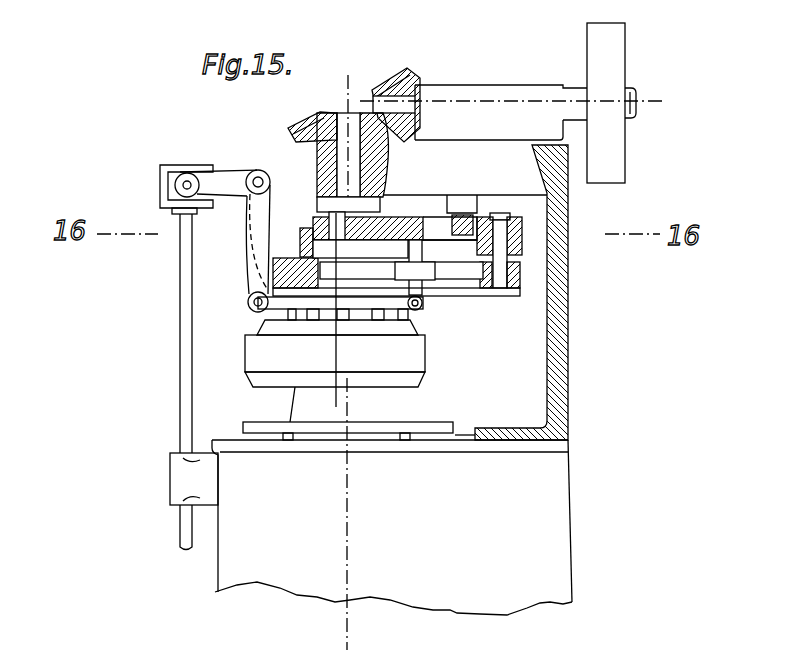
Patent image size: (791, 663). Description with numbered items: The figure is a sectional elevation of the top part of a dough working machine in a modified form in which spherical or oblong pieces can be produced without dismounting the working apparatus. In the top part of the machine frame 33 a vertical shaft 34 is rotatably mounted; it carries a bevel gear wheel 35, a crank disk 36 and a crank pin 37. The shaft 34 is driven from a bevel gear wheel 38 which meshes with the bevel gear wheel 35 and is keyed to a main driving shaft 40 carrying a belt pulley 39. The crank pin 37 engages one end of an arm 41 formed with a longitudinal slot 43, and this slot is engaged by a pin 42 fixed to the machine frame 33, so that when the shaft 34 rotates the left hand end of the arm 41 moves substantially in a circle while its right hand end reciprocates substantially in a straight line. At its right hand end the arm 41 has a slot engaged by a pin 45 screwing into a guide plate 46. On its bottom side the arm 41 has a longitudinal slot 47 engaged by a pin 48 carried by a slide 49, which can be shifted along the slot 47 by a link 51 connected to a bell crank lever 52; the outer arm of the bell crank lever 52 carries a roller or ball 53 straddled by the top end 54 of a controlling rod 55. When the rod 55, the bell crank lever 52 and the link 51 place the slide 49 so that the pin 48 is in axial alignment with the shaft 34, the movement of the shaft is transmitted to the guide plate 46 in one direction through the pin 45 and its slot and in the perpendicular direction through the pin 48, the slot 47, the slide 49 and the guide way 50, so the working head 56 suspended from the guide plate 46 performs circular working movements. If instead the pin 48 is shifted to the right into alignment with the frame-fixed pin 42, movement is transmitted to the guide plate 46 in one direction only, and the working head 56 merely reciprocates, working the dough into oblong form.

The machine frame 33 is at (558, 385).
The vertical shaft 34 is at (346, 127).
The bevel gear wheel 35 is at (307, 122).
The crank disk 36 is at (327, 203).
The crank pin 37 is at (327, 225).
The bevel gear wheel 38 is at (390, 82).
The belt pulley 39 is at (612, 168).
The main driving shaft 40 is at (632, 98).
The arm 41 is at (515, 218).
The pin 42 is at (442, 215).
The longitudinal slot 43 is at (438, 230).
The pin 45 is at (500, 230).
The guide plate 46 is at (513, 288).
The longitudinal slot 47 is at (380, 248).
The pin 48 is at (415, 248).
The slide 49 is at (420, 268).
The guide way 50 is at (465, 268).
The link 51 is at (280, 303).
The bell crank lever 52 is at (262, 230).
The roller or ball 53 is at (186, 174).
The top end 54 is at (163, 183).
The controlling rod 55 is at (187, 310).
The working head 56 is at (410, 357).